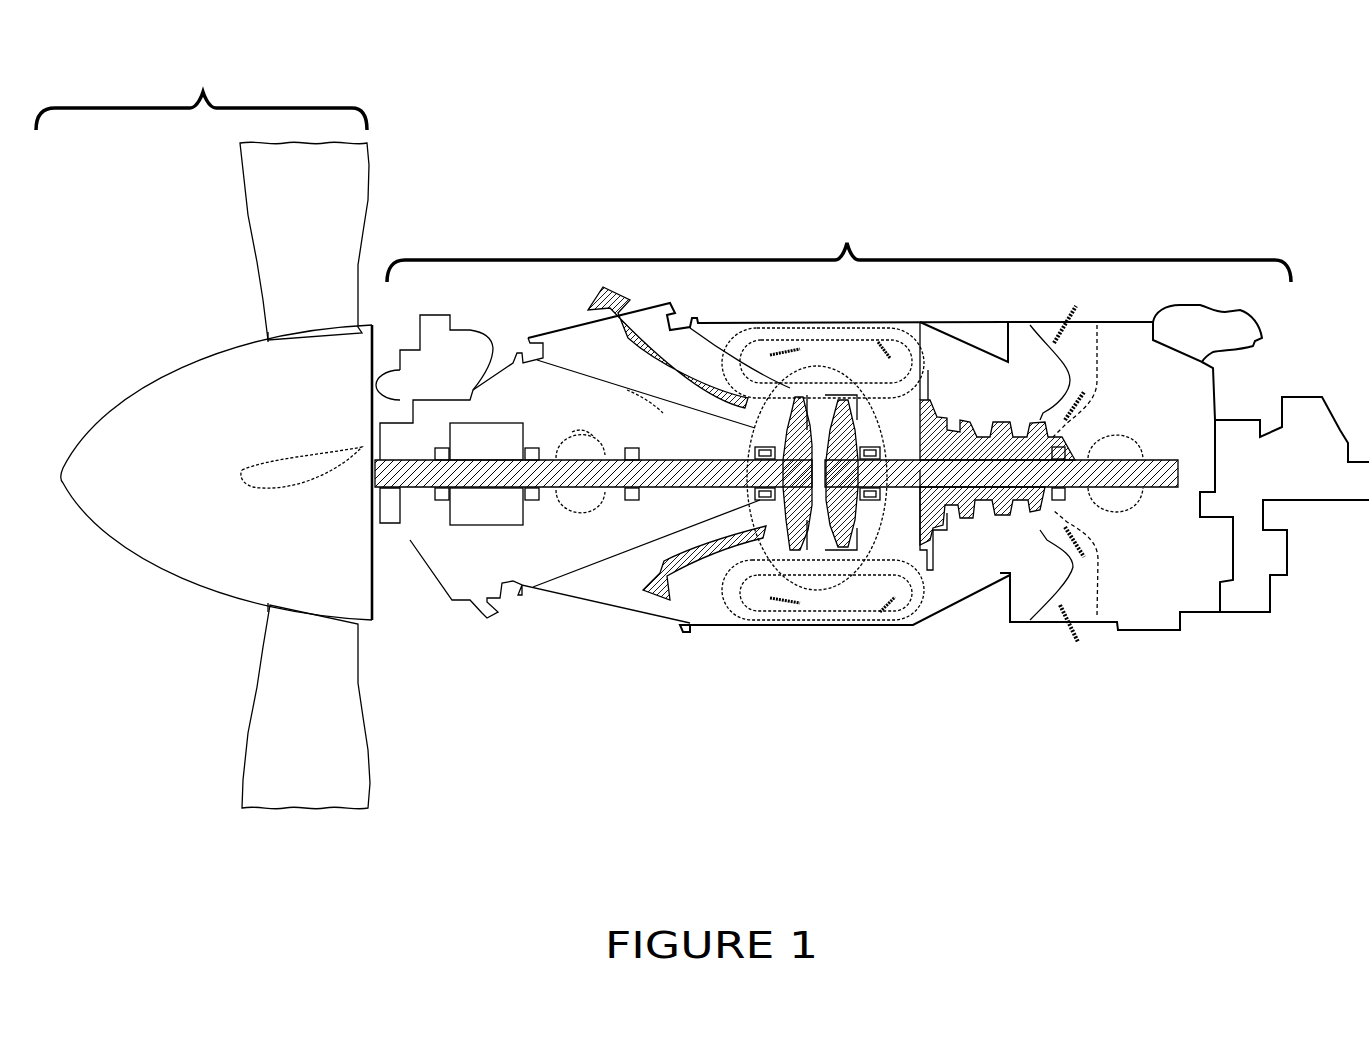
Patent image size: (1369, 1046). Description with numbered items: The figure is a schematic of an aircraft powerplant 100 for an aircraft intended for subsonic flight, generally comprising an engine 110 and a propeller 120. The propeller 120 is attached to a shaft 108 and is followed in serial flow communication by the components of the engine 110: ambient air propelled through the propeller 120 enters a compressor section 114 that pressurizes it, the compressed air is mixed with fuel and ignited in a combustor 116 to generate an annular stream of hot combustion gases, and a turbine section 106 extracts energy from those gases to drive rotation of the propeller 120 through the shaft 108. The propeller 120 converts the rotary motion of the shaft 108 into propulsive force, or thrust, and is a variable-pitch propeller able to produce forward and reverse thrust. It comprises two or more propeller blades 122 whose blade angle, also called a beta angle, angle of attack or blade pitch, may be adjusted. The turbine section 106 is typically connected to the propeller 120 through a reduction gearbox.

The aircraft powerplant 100 is at (997, 86).
The turbine section 106 is at (748, 493).
The shaft 108 is at (402, 490).
The engine 110 is at (872, 457).
The compressor section 114 is at (968, 534).
The combustor 116 is at (843, 357).
The propeller 120 is at (267, 424).
The propeller blades 122 is at (343, 197).